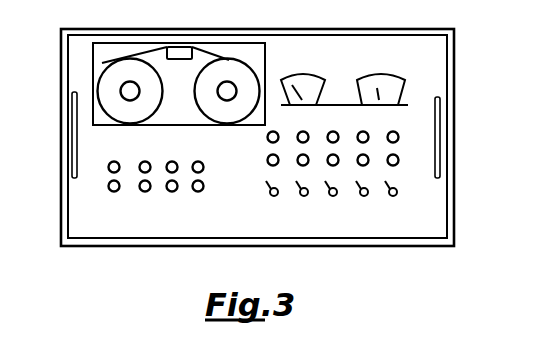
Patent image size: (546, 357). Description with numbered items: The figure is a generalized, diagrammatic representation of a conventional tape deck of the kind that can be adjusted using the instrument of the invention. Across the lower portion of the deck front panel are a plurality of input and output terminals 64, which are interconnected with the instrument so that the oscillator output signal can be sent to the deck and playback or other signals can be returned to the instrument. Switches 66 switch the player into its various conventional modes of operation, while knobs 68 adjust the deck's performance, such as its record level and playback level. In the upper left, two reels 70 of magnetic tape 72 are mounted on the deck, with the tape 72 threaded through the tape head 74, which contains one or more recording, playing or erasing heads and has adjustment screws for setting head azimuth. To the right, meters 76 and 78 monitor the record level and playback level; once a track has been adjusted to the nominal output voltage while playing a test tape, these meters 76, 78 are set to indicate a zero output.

The input and output terminals 64 is at (106, 163).
The switches 66 is at (401, 191).
The knobs 68 is at (401, 135).
The reels 70 is at (115, 72).
The magnetic tape 72 is at (207, 53).
The tape head 74 is at (184, 55).
The meter 76 is at (310, 72).
The meter 78 is at (382, 72).